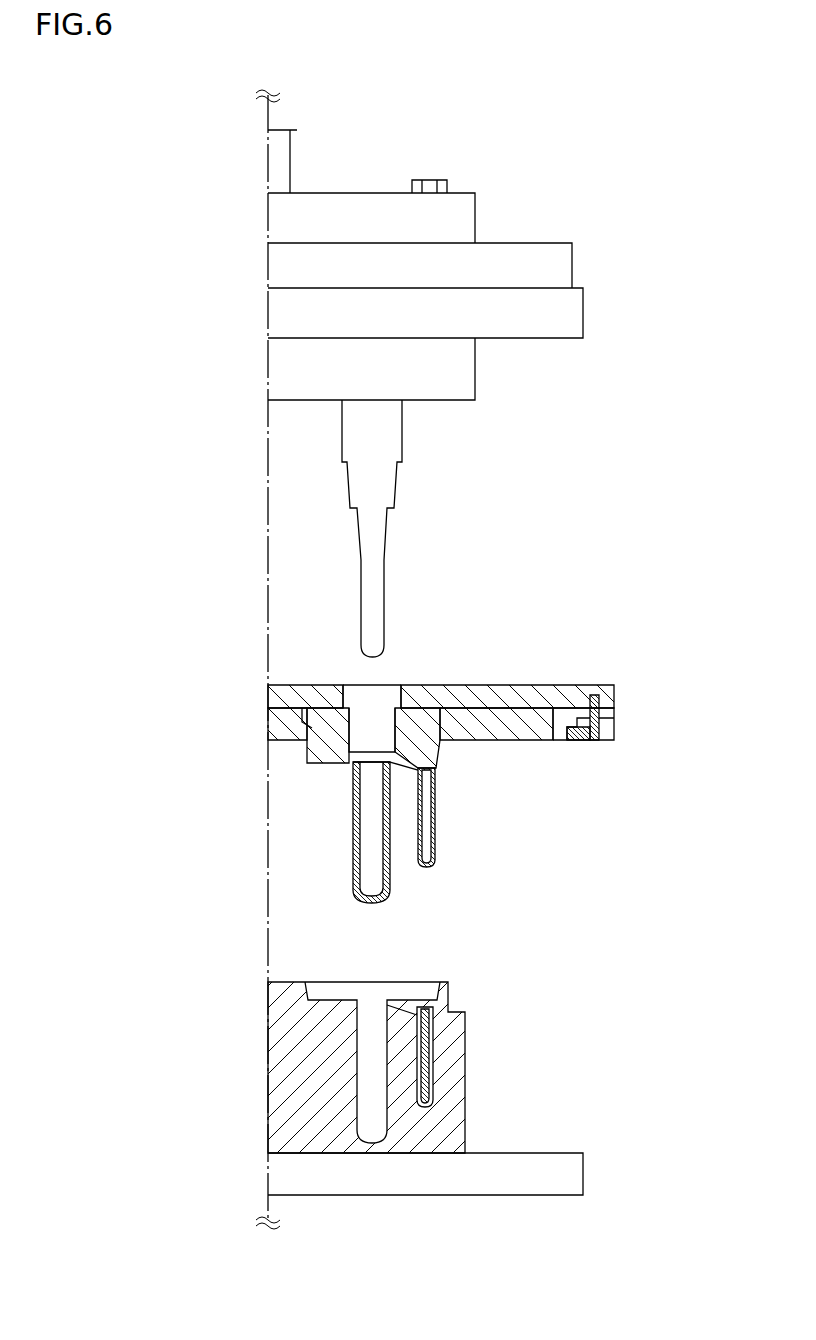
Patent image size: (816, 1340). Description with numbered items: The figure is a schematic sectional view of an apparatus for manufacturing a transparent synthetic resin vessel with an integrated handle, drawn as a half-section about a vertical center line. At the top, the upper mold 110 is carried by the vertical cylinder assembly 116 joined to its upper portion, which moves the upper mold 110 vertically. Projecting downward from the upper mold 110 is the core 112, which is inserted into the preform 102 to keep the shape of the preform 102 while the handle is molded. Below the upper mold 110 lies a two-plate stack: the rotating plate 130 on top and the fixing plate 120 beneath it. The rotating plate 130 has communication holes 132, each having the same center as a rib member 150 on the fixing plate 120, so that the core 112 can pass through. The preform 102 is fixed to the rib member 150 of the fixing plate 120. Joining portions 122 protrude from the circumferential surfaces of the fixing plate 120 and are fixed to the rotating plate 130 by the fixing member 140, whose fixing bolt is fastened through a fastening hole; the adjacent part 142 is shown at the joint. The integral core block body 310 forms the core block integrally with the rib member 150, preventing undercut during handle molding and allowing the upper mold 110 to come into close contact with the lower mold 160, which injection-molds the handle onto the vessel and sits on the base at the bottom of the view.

The vertical cylinder assembly 116 is at (468, 218).
The upper mold 110 is at (468, 370).
The core 112 is at (392, 483).
The communication holes 132 is at (378, 686).
The joining portions 122 is at (571, 707).
The rotating plate 130 is at (614, 690).
The fixing member 140 is at (614, 718).
The fastening base 142 is at (572, 741).
The fixing plate 120 is at (544, 741).
The rib member 150 is at (305, 728).
The preform 102 is at (353, 842).
The integral core block body 310 is at (437, 836).
The lower mold 160 is at (578, 1177).